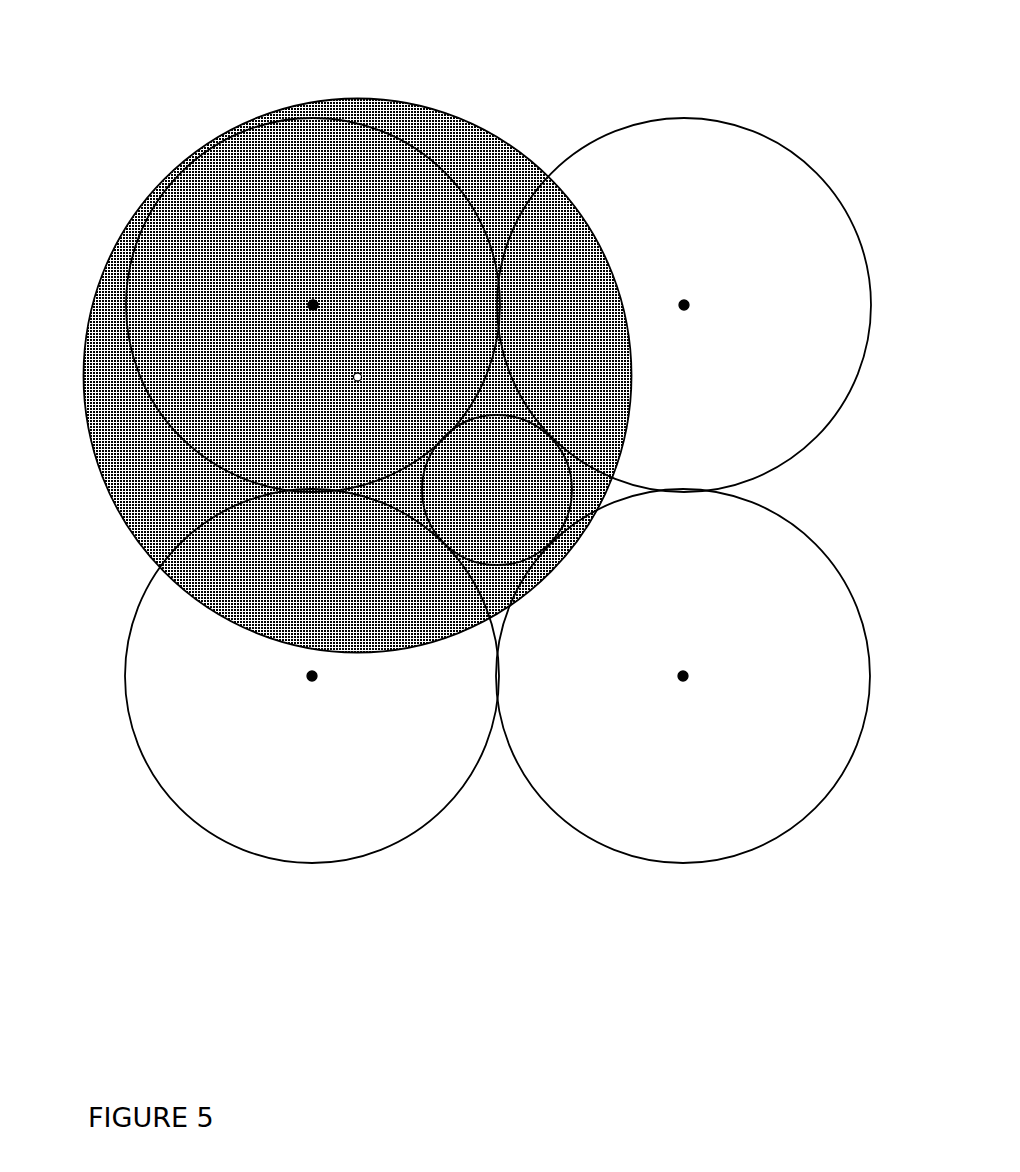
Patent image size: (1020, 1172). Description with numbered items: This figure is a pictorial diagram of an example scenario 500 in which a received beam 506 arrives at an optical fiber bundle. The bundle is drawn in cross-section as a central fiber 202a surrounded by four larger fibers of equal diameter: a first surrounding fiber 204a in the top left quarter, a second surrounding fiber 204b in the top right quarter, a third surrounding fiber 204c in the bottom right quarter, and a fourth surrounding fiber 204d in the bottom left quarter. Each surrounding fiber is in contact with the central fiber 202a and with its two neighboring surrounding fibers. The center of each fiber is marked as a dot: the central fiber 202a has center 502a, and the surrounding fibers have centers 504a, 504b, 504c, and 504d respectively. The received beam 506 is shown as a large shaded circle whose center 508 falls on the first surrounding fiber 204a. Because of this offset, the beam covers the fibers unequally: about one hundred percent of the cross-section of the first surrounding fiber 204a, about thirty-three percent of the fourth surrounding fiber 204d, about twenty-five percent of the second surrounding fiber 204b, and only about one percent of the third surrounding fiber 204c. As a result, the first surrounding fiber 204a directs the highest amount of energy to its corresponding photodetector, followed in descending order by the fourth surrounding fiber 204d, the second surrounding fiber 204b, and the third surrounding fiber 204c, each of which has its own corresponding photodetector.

The example scenario 500 is at (169, 1093).
The received beam 506 is at (457, 133).
The center of the received beam 508 is at (359, 372).
The first surrounding fiber 204a is at (150, 235).
The second surrounding fiber 204b is at (828, 202).
The third surrounding fiber 204c is at (855, 735).
The fourth surrounding fiber 204d is at (140, 735).
The center of the first surrounding fiber 504a is at (313, 305).
The center of the second surrounding fiber 504b is at (684, 305).
The center of the third surrounding fiber 504c is at (683, 678).
The center of the fourth surrounding fiber 504d is at (312, 677).
The central fiber 202a is at (520, 459).
The center of the central fiber 502a is at (500, 492).